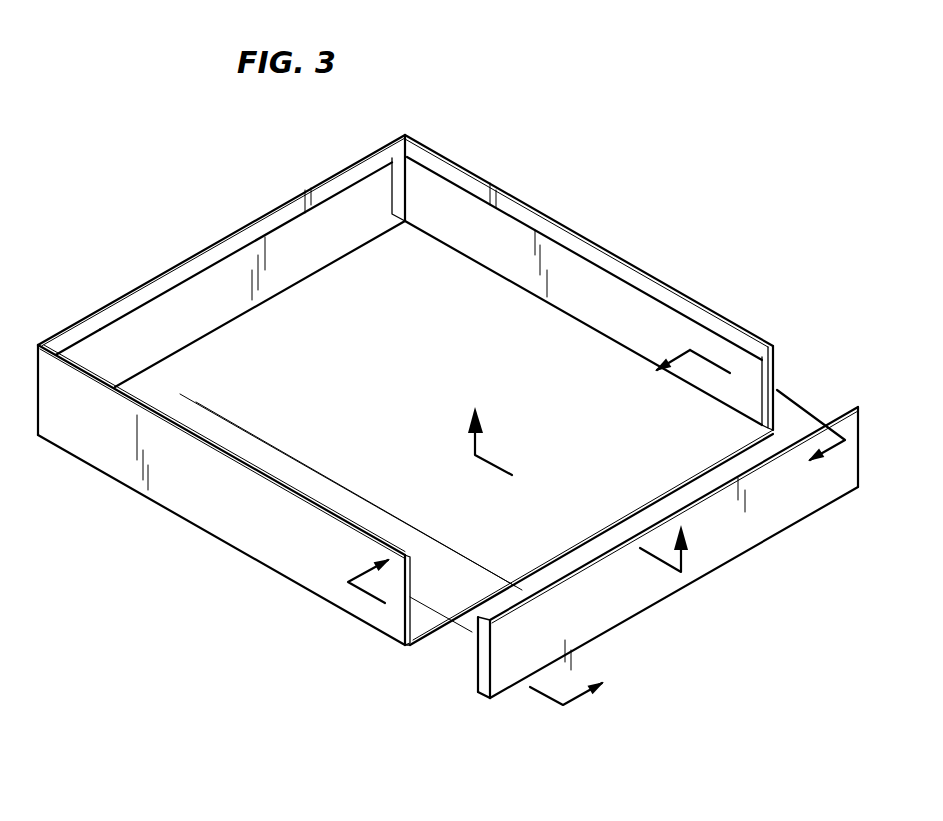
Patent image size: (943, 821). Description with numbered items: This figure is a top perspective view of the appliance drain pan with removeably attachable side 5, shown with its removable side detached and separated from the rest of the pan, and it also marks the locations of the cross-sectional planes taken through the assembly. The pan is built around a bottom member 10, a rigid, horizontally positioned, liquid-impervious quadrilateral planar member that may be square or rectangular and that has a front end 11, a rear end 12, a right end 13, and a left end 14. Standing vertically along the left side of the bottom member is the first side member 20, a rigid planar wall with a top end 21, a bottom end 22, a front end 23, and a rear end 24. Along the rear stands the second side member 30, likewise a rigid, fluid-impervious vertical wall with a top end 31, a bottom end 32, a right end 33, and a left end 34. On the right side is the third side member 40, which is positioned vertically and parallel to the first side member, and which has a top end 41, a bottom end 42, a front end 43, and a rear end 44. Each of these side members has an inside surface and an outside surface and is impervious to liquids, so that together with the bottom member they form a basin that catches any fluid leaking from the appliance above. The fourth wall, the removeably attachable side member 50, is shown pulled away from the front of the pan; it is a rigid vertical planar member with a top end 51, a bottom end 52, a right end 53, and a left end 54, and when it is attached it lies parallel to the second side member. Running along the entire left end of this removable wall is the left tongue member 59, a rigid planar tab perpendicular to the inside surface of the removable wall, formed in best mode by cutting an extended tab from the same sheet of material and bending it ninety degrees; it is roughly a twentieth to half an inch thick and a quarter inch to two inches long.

The appliance drain pan with removeably attachable side 5 is at (150, 655).
The bottom member 10 is at (444, 433).
The front end 11 is at (589, 537).
The rear end 12 is at (260, 304).
The right end 13 is at (583, 323).
The left end 14 is at (351, 492).
The first side member 20 is at (200, 493).
The top end 21 is at (283, 495).
The bottom end 22 is at (140, 466).
The front end 23 is at (405, 613).
The rear end 24 is at (50, 378).
The second side member 30 is at (289, 247).
The top end 31 is at (214, 240).
The bottom end 32 is at (333, 258).
The right end 33 is at (407, 133).
The left end 34 is at (86, 349).
The third side member 40 is at (573, 282).
The top end 41 is at (607, 260).
The bottom end 42 is at (537, 287).
The front end 43 is at (778, 356).
The rear end 44 is at (412, 183).
The removeably attachable side member 50 is at (740, 520).
The top end 51 is at (628, 547).
The bottom end 52 is at (762, 513).
The right end 53 is at (843, 412).
The left end 54 is at (489, 692).
The left tongue member 59 is at (480, 665).